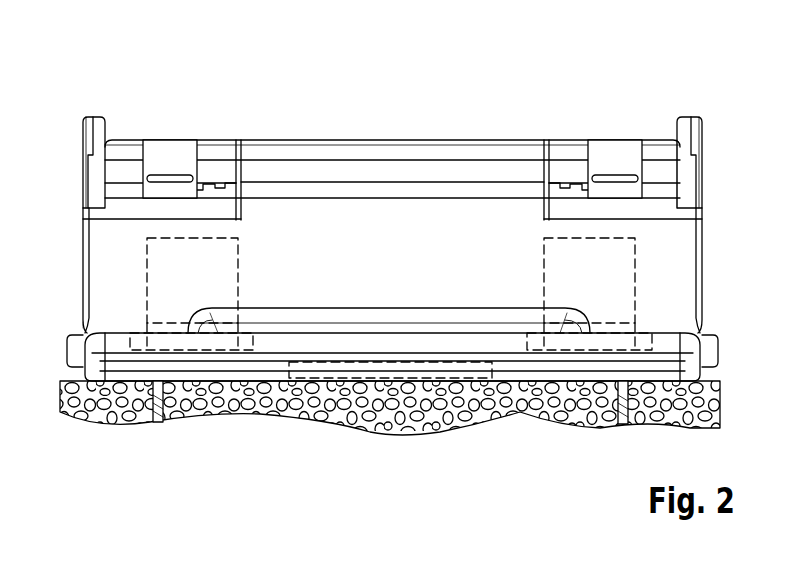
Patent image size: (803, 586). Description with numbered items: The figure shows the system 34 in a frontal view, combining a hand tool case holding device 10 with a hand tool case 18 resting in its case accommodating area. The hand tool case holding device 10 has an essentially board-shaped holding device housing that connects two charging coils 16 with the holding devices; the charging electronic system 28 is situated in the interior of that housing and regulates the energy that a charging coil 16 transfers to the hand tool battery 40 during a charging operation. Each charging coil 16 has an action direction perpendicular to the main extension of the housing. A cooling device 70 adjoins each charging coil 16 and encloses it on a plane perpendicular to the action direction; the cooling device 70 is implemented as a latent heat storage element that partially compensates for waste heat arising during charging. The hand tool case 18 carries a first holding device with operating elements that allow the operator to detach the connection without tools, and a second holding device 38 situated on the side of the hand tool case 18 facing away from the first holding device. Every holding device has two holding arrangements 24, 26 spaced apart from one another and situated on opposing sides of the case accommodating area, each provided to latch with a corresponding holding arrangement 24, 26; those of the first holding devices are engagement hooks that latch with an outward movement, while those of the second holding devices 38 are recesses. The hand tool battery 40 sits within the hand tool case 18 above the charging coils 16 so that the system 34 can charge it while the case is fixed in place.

The hand tool case holding device 10 is at (277, 347).
The charging coil 16 is at (176, 430).
The hand tool case 18 is at (407, 222).
The holding arrangement 24 is at (64, 316).
The holding arrangement 26 is at (721, 316).
The charging electronic system 28 is at (394, 366).
The system 34 is at (682, 85).
The second holding device of hand tool case 38 is at (78, 103).
The hand tool battery 40 is at (212, 250).
The cooling device 70 is at (130, 335).